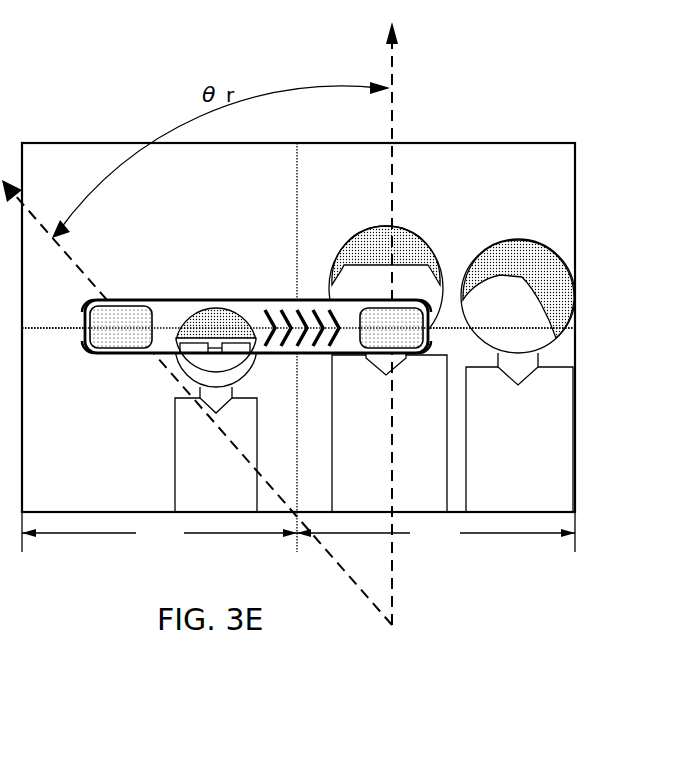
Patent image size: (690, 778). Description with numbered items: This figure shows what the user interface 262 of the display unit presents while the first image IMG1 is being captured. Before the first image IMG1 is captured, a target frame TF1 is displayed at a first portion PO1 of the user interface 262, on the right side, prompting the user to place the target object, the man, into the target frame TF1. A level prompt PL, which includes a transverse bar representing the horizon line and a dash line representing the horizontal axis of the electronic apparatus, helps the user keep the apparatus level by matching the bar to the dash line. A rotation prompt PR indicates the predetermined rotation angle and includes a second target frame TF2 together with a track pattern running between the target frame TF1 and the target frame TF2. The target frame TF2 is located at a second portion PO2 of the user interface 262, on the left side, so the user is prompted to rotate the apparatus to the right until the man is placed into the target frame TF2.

The user interface 262 is at (438, 143).
The first image IMG1 is at (524, 199).
The level prompt PL is at (88, 348).
The rotation prompt PR is at (280, 300).
The target frame TF1 is at (412, 344).
The target frame TF2 is at (142, 344).
The first portion PO1 is at (436, 534).
The second portion PO2 is at (159, 534).